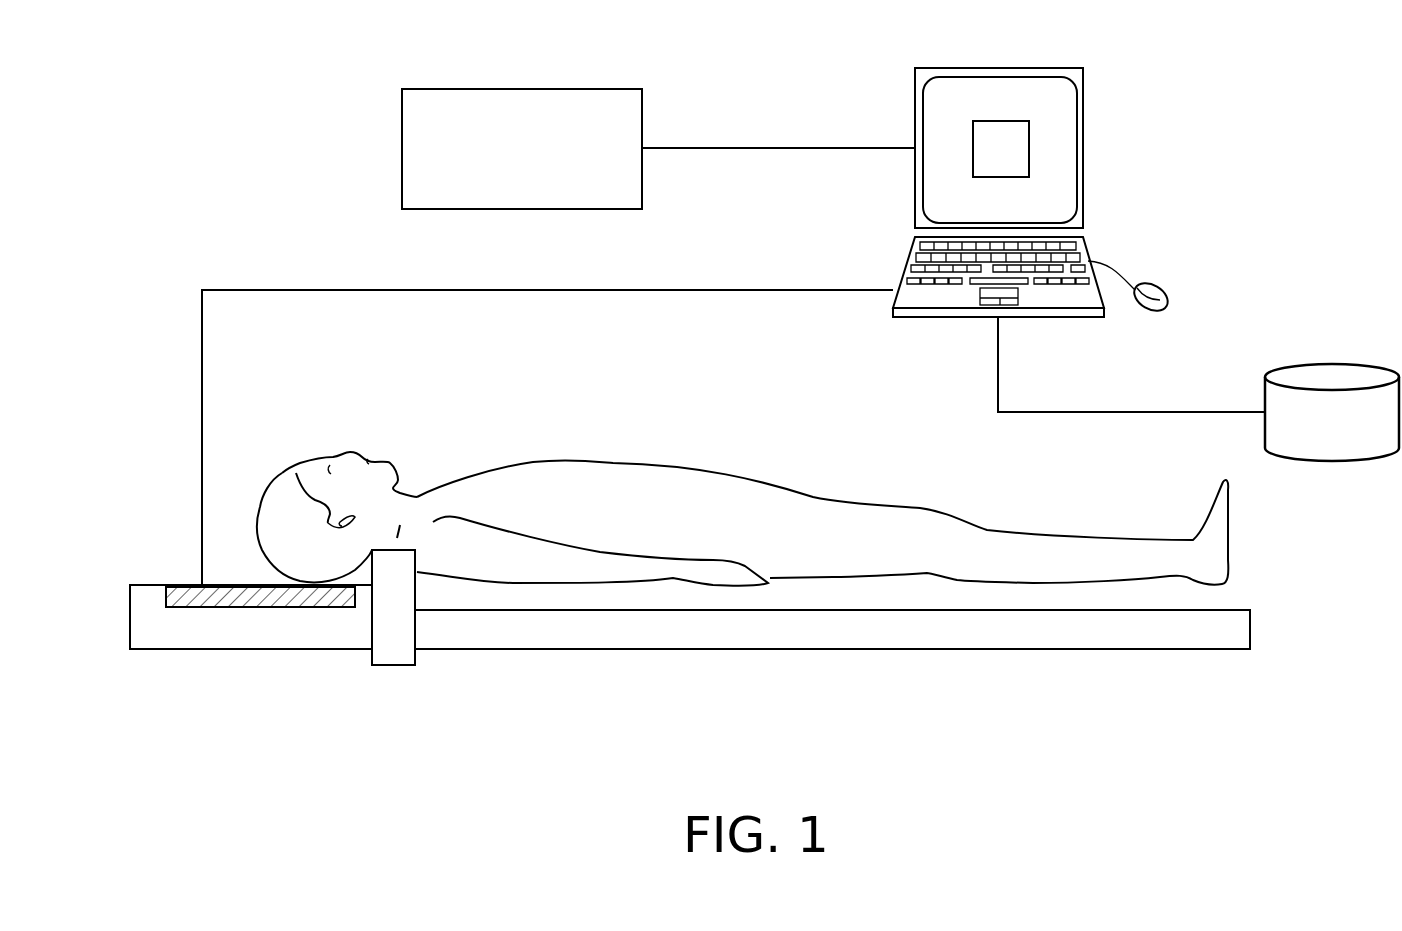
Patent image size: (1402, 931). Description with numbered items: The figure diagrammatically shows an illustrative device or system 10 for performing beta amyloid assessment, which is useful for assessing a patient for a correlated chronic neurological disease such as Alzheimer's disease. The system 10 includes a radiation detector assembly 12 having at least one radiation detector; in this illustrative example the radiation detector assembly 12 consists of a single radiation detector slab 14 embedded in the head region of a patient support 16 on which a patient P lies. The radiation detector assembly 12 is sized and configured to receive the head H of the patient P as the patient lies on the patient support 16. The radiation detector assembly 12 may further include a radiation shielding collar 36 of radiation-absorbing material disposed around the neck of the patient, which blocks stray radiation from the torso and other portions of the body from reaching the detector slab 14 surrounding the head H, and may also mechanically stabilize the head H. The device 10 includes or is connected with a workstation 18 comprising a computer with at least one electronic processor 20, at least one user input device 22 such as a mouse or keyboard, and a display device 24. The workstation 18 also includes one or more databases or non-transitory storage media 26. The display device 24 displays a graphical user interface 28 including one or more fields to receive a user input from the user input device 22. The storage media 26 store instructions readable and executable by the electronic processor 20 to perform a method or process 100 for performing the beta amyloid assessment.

The device or system for performing beta amyloid assessment 10 is at (237, 121).
The method or process for performing beta amyloid assessment 100 is at (522, 89).
The radiation detector assembly 12 is at (172, 650).
The radiation detector slab 14 is at (265, 607).
The radiation shielding collar 36 is at (395, 665).
The patient support 16 is at (1005, 650).
The workstation 18 is at (1083, 96).
The electronic processor 20 is at (920, 190).
The user input device 22 is at (1155, 287).
The display device 24 is at (928, 93).
The non-transitory storage media 26 is at (1333, 363).
The graphical user interface 28 is at (1015, 160).
The head H is at (278, 473).
The patient P is at (485, 470).